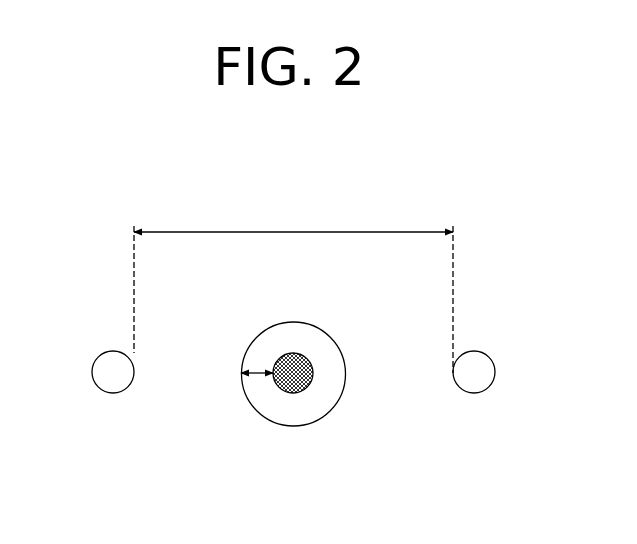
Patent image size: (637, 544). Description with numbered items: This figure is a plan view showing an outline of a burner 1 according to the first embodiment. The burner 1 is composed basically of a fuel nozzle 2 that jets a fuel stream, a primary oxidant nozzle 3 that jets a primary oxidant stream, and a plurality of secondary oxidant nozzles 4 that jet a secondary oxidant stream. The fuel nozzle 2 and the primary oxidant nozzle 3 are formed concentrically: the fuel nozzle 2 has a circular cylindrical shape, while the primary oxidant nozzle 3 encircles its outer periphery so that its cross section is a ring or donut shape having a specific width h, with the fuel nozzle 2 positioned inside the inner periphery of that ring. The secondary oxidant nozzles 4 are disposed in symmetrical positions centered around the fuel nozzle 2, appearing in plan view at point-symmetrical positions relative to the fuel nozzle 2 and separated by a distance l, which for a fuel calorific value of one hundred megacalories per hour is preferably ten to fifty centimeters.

The burner 1 is at (92, 265).
The fuel nozzle 2 is at (275, 391).
The primary oxidant nozzle 3 is at (327, 421).
The secondary oxidant nozzles 4 is at (95, 394).